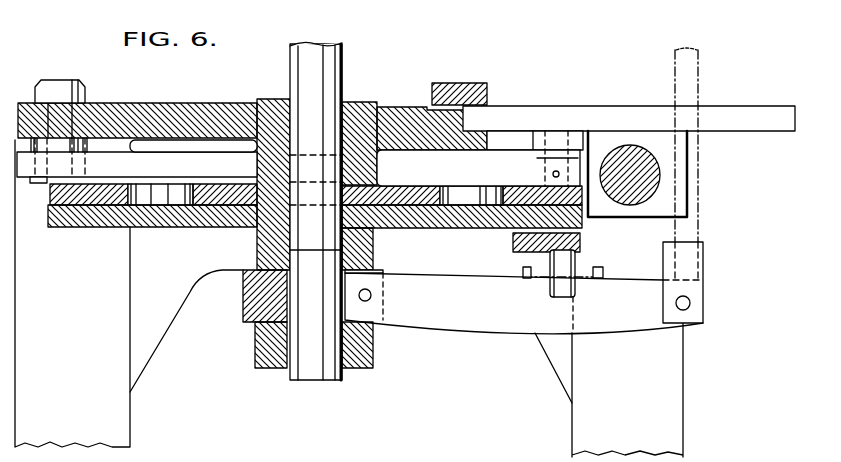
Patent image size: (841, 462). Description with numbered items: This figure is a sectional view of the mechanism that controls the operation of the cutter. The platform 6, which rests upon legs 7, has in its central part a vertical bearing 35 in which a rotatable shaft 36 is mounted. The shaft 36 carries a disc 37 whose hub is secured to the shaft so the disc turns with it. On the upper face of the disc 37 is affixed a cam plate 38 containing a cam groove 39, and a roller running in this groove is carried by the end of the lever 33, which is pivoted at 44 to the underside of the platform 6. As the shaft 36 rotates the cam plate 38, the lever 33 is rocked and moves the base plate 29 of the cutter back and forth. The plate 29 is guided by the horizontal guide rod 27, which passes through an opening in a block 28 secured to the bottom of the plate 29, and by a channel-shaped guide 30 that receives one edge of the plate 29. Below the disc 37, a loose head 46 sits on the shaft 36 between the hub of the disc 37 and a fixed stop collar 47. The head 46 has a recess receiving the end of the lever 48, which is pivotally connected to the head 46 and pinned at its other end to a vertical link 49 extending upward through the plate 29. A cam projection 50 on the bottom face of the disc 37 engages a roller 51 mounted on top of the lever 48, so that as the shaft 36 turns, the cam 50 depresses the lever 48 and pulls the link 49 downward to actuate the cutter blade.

The platform 6 is at (213, 108).
The legs 7 is at (117, 430).
The horizontal guide rod 27 is at (651, 193).
The block 28 is at (675, 165).
The base plate 29 is at (753, 116).
The channel-shaped guide 30 is at (473, 84).
The lever 33 is at (493, 172).
The vertical bearing 35 is at (363, 101).
The shaft 36 is at (308, 48).
The disc 37 is at (438, 230).
The cam plate 38 is at (220, 228).
The cam groove 39 is at (153, 228).
The pivot 44 is at (63, 80).
The loose head 46 is at (245, 323).
The fixed stop collar 47 is at (368, 347).
The lever 48 is at (473, 324).
The vertical link 49 is at (701, 68).
The cam projection 50 is at (517, 250).
The roller 51 is at (562, 287).